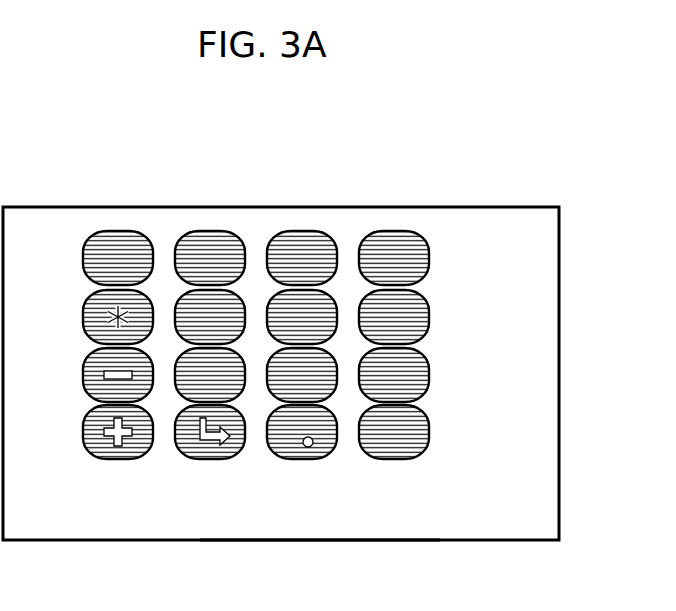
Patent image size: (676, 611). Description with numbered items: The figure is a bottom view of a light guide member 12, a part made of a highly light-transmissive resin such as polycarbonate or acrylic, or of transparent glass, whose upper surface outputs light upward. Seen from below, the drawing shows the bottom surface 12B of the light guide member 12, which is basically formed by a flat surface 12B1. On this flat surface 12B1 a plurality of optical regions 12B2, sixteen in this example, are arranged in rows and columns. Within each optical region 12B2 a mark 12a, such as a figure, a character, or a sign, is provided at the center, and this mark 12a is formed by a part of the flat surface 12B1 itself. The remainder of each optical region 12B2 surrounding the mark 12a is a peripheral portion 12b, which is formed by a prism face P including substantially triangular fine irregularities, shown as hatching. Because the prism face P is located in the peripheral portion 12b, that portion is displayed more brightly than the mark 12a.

The light guide member 12 is at (563, 360).
The bottom surface 12B is at (383, 517).
The flat surface 12B1 is at (262, 517).
The optical region 12B2 is at (106, 222).
The mark 12a is at (187, 253).
The peripheral portion 12b is at (97, 255).
The prism face P is at (85, 317).